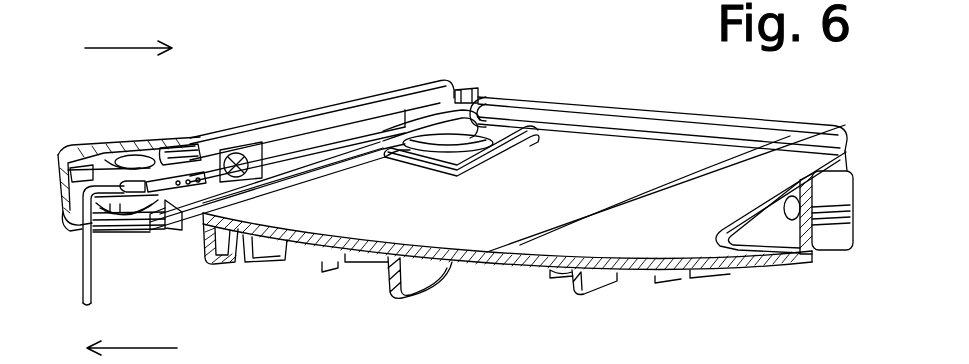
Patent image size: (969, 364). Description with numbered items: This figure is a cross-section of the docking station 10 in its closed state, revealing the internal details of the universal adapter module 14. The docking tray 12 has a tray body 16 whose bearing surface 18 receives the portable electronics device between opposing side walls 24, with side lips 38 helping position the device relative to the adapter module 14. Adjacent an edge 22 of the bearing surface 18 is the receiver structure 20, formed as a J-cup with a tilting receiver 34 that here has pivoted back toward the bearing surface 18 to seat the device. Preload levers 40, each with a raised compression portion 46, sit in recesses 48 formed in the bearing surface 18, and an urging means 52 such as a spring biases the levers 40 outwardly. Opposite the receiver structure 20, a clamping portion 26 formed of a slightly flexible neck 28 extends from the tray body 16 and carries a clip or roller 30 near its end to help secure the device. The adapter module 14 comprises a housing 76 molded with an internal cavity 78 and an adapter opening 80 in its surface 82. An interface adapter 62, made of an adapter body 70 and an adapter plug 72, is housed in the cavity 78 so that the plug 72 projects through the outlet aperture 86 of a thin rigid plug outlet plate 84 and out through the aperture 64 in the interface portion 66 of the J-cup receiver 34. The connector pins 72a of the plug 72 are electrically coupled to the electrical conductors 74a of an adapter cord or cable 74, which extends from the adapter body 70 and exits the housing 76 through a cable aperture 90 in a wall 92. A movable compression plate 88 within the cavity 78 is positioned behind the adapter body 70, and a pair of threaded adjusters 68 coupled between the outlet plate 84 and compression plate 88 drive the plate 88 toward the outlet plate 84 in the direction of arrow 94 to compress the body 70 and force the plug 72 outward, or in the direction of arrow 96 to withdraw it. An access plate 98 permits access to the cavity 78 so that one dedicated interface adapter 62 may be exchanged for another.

The docking station 10 is at (657, 110).
The docking tray 12 is at (488, 263).
The universal adapter module 14 is at (131, 139).
The tray body 16 is at (352, 265).
The bearing surface 18 is at (496, 233).
The receiver structure 20 is at (403, 88).
The edge 22 is at (343, 172).
The side walls 24 is at (722, 113).
The clamping portion 26 is at (790, 268).
The neck 28 is at (708, 282).
The clip or roller 30 is at (798, 190).
The tilting receiver 34 is at (363, 97).
The side lips 38 is at (467, 95).
The preload levers 40 is at (488, 127).
The compression portion 46 is at (460, 140).
The recesses 48 is at (540, 132).
The urging means 52 is at (485, 168).
The interface adapter 62 is at (213, 173).
The aperture 64 is at (270, 142).
The interface portion 66 is at (267, 160).
The adjusters 68 is at (242, 140).
The adapter body 70 is at (142, 197).
The adapter plug 72 is at (157, 187).
The connector pins 72a is at (190, 186).
The adapter cord or cable 74 is at (83, 292).
The electrical conductors 74a is at (130, 222).
The housing 76 is at (117, 141).
The internal cavity 78 is at (86, 178).
The adapter opening 80 is at (176, 227).
The surface 82 is at (176, 145).
The plug outlet plate 84 is at (240, 182).
The outlet aperture 86 is at (187, 147).
The compression plate 88 is at (147, 165).
The cable aperture 90 is at (100, 232).
The wall 92 is at (115, 230).
The arrow 94 is at (114, 51).
The arrow 96 is at (145, 350).
The access plate 98 is at (78, 228).